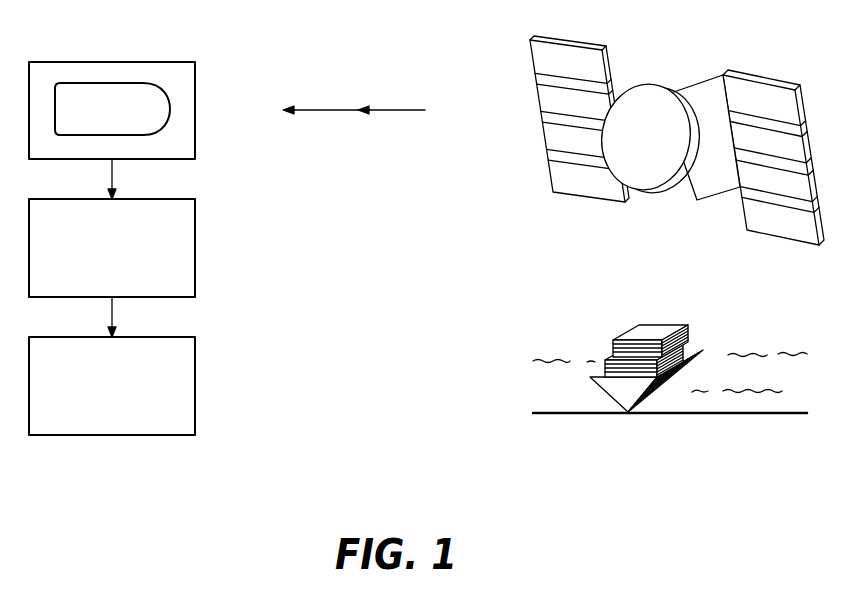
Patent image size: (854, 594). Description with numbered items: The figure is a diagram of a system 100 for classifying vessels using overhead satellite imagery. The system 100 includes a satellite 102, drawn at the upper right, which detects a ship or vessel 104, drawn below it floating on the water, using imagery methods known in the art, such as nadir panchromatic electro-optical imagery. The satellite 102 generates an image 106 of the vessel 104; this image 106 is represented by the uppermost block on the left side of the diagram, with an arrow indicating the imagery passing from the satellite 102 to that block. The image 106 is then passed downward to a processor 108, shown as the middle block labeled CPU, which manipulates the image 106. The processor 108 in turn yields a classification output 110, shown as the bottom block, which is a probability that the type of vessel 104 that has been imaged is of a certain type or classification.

The system 100 is at (417, 334).
The satellite 102 is at (541, 136).
The vessel 104 is at (593, 370).
The image 106 is at (196, 138).
The processor 108 is at (196, 258).
The classification output 110 is at (196, 390).